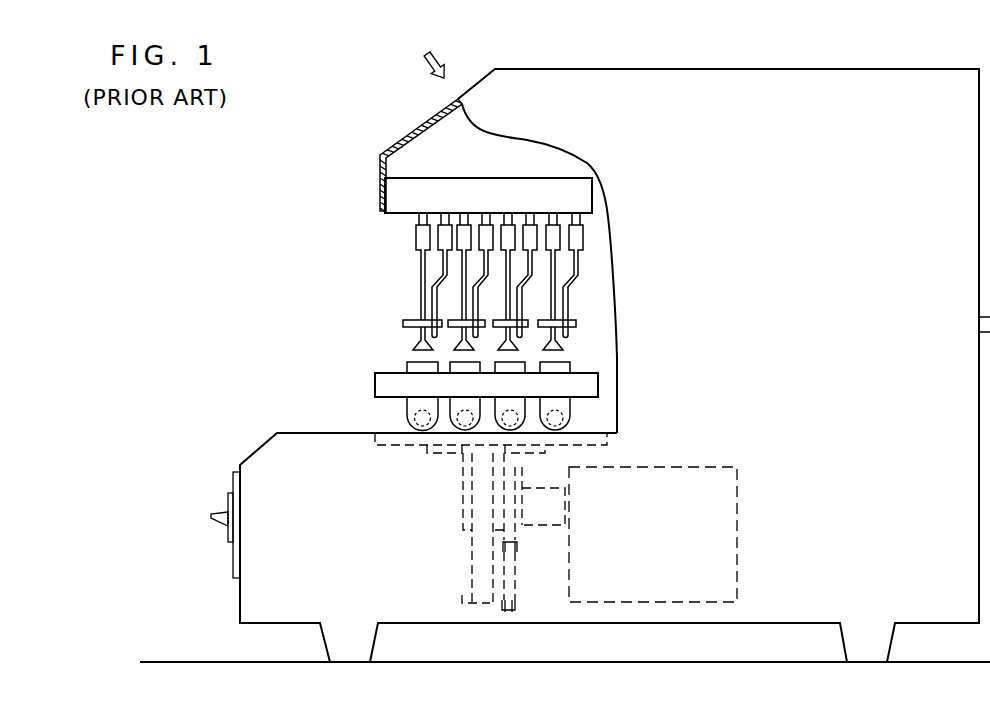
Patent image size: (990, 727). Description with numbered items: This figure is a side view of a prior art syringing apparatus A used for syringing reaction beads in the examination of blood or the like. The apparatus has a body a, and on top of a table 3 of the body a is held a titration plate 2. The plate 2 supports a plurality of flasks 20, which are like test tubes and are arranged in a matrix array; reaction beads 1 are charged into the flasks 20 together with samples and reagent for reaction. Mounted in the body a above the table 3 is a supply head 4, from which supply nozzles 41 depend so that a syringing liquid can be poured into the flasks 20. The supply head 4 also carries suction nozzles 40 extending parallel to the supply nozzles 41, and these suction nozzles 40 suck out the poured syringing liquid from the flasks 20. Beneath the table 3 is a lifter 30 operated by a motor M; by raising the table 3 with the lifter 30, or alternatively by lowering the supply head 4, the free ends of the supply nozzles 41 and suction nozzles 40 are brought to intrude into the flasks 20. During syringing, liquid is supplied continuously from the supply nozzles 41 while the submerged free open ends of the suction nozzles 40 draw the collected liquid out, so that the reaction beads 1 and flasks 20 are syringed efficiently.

The reaction beads 1 is at (560, 418).
The titration plate 2 is at (375, 373).
The table 3 is at (457, 447).
The supply head 4 is at (378, 203).
The flasks 20 is at (563, 368).
The lifter 30 is at (512, 548).
The suction nozzles 40 is at (487, 272).
The supply nozzles 41 is at (480, 308).
The body a is at (260, 443).
The syringing apparatus A is at (429, 53).
The motor M is at (603, 593).